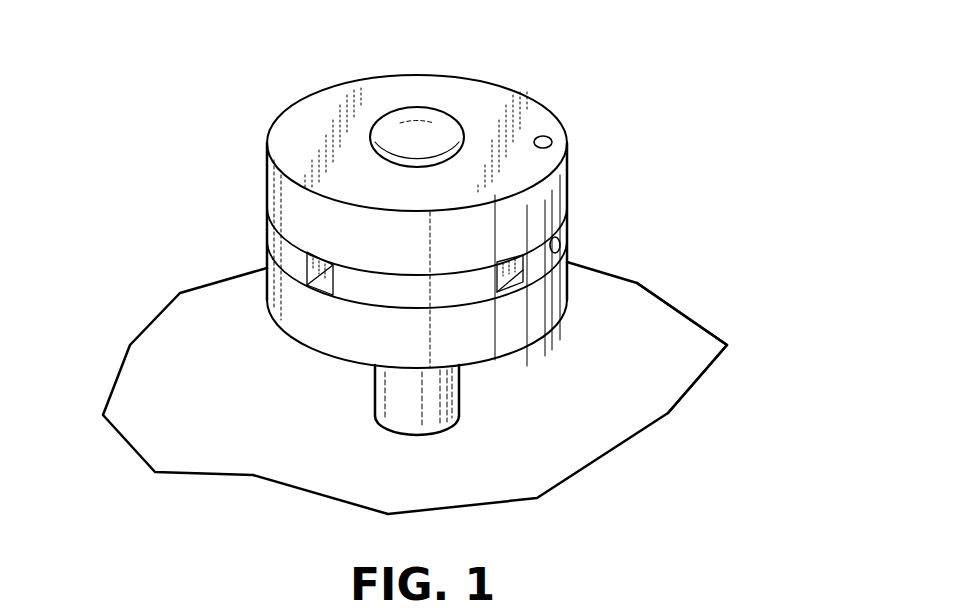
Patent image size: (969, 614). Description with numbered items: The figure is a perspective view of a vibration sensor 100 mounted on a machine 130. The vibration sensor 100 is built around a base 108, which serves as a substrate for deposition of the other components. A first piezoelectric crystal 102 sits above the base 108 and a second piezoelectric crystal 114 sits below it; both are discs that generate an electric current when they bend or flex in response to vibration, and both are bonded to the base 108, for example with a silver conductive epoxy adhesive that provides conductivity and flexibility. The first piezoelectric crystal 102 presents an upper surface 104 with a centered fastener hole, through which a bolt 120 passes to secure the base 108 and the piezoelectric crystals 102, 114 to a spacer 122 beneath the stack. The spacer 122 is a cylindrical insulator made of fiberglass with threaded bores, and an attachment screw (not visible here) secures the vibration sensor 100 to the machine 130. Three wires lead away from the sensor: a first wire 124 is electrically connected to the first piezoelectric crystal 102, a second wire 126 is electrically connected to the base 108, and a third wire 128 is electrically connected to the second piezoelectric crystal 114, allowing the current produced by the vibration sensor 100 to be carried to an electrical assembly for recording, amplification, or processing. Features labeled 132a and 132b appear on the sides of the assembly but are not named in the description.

The vibration sensor 100 is at (158, 85).
The first piezoelectric crystal 102 is at (567, 177).
The upper surface 104 is at (483, 116).
The base 108 is at (267, 240).
The second piezoelectric crystal 114 is at (268, 312).
The bolt 120 is at (418, 130).
The spacer 122 is at (390, 410).
The first wire 124 is at (548, 137).
The second wire 126 is at (557, 243).
The third wire 128 is at (703, 368).
The machine 130 is at (560, 425).
The first tab 132a is at (333, 263).
The second tab 132b is at (523, 268).